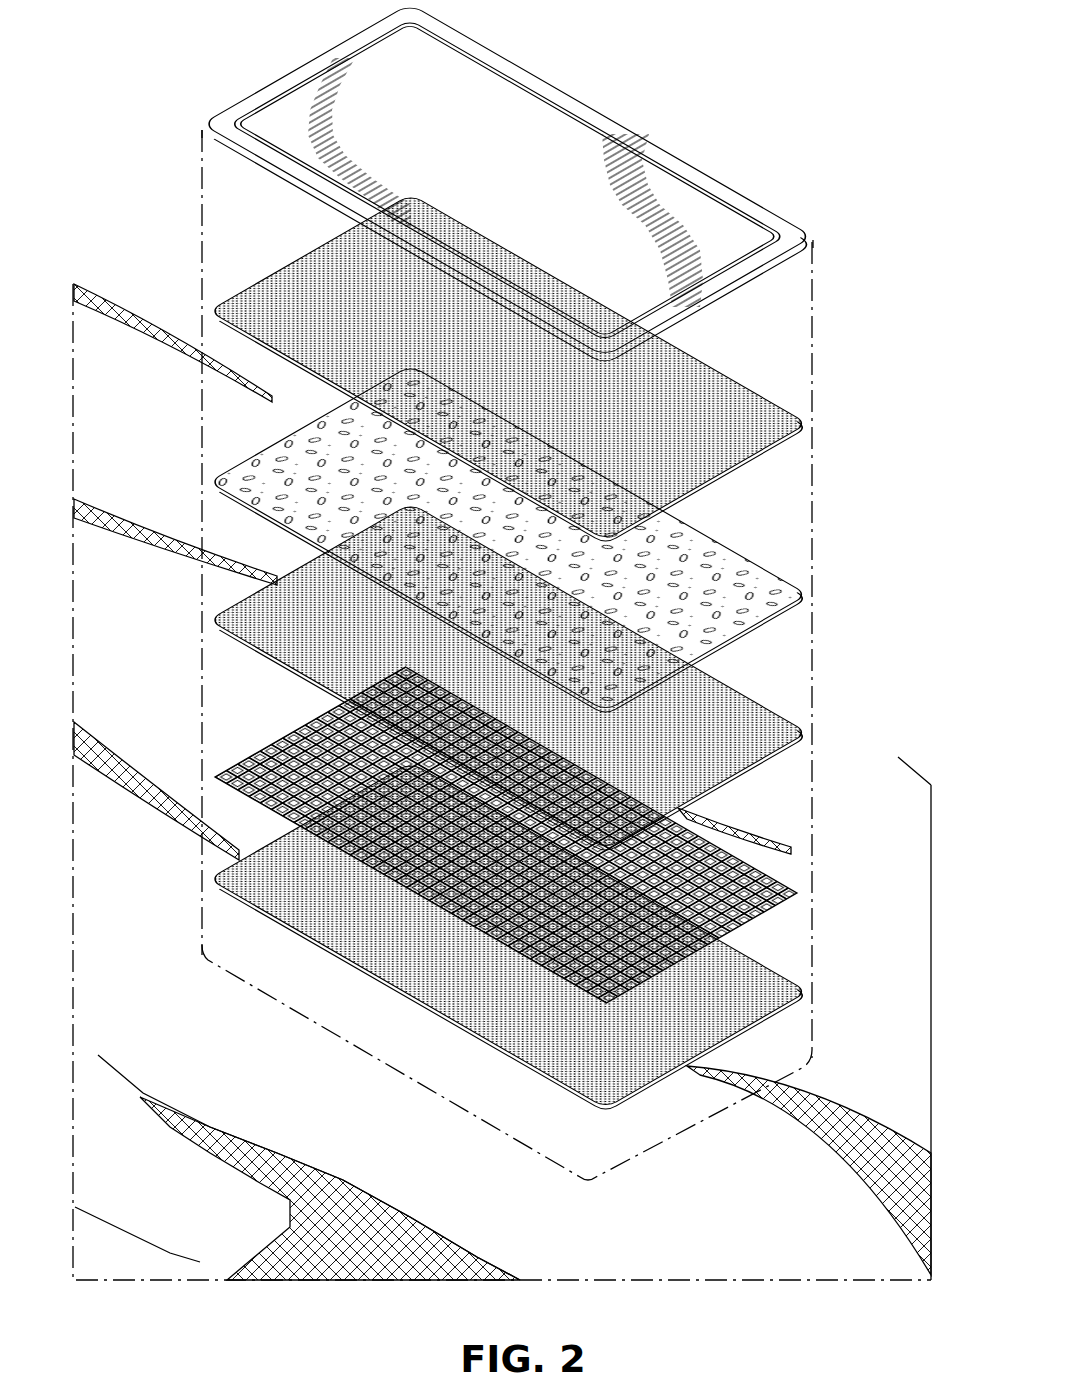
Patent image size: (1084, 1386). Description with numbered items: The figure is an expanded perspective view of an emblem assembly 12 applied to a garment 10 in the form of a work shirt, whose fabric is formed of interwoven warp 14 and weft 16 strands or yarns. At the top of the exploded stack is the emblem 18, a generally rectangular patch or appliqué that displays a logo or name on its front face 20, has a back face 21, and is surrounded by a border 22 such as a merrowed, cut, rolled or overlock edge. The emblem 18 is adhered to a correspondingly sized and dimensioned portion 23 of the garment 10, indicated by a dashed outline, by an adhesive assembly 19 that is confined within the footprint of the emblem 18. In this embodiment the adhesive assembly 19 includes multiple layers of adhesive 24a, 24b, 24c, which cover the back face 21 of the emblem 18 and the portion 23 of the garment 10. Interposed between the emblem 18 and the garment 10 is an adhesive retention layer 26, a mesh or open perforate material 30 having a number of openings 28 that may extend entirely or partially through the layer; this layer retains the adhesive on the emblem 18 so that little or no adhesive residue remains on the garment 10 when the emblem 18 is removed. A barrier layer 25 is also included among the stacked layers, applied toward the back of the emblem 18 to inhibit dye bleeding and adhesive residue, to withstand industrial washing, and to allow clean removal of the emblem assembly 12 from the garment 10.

The garment 10 is at (731, 1225).
The emblem assembly 12 is at (850, 567).
The warp 14 is at (297, 1260).
The weft 16 is at (273, 1270).
The emblem 18 is at (507, 184).
The adhesive assembly 19 is at (151, 915).
The front face 20 is at (495, 208).
The back face 21 is at (268, 178).
The border 22 is at (507, 180).
The portion 23 is at (237, 985).
The layer of adhesive 24a is at (718, 365).
The layer of adhesive 24b is at (805, 745).
The layer of adhesive 24c is at (744, 955).
The barrier layer 25 is at (812, 600).
The adhesive retention layer 26 is at (514, 835).
The openings 28 is at (506, 835).
The material 30 is at (271, 764).